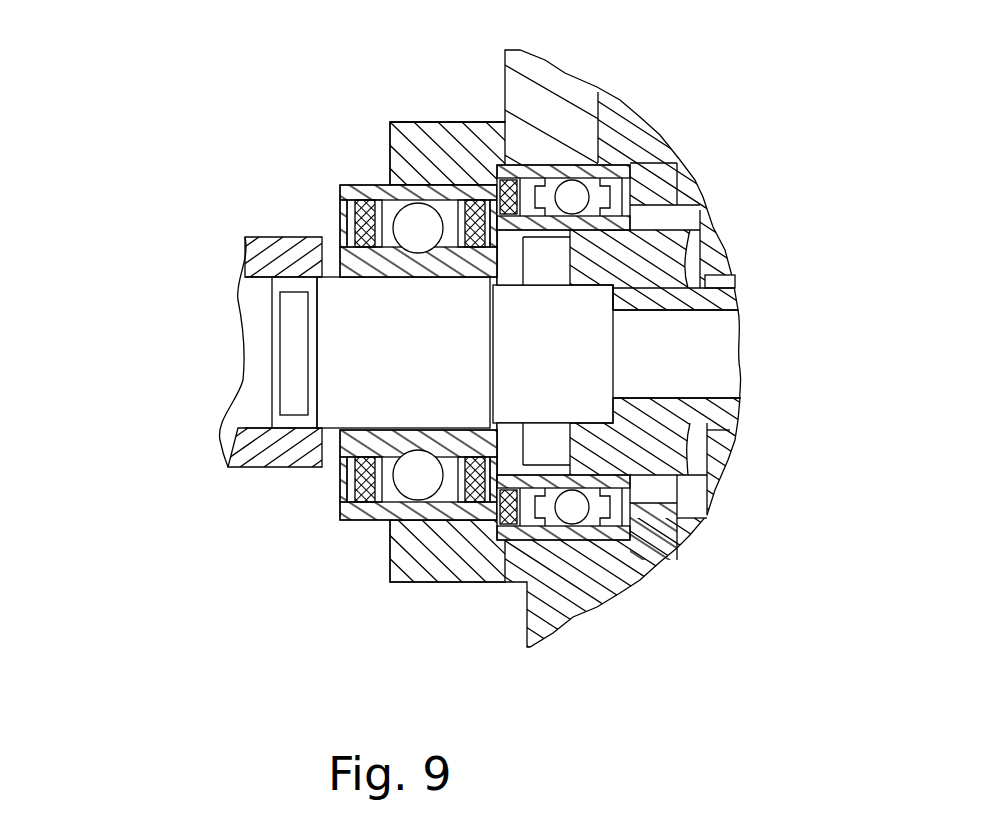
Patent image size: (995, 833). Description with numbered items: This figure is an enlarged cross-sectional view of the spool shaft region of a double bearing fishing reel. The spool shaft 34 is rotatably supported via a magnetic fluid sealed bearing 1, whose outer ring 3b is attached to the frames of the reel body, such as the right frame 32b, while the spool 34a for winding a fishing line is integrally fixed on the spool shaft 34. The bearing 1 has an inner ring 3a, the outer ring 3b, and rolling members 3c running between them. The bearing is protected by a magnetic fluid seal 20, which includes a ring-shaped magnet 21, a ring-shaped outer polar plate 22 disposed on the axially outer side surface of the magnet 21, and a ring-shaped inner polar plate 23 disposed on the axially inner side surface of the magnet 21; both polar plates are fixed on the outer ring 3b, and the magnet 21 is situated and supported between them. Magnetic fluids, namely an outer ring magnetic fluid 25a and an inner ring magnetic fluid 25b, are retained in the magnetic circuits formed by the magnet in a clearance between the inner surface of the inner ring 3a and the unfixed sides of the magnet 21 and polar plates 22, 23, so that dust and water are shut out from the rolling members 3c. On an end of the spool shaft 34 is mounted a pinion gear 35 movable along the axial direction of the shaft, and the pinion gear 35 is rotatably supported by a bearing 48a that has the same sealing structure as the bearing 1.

The bearing 1 is at (362, 161).
The inner ring 3a is at (417, 455).
The outer ring 3b is at (385, 508).
The rolling members 3c is at (420, 480).
The magnetic fluid seal 20 is at (504, 226).
The ring-shaped magnet 21 is at (363, 200).
The outer polar plate 22 is at (350, 228).
The inner polar plate 23 is at (392, 225).
The outer ring magnetic fluid 25a is at (455, 235).
The inner ring magnetic fluid 25b is at (445, 262).
The right frame 32b is at (413, 125).
The spool shaft 34 is at (238, 347).
The spool 34a is at (245, 258).
The pinion gear 35 is at (672, 257).
The bearing 48a is at (577, 193).